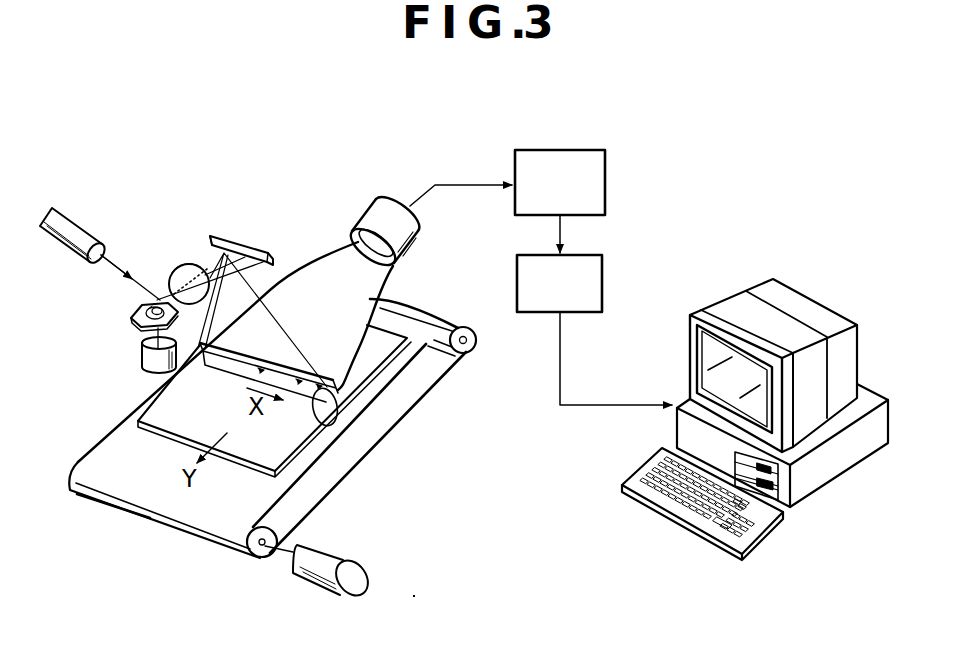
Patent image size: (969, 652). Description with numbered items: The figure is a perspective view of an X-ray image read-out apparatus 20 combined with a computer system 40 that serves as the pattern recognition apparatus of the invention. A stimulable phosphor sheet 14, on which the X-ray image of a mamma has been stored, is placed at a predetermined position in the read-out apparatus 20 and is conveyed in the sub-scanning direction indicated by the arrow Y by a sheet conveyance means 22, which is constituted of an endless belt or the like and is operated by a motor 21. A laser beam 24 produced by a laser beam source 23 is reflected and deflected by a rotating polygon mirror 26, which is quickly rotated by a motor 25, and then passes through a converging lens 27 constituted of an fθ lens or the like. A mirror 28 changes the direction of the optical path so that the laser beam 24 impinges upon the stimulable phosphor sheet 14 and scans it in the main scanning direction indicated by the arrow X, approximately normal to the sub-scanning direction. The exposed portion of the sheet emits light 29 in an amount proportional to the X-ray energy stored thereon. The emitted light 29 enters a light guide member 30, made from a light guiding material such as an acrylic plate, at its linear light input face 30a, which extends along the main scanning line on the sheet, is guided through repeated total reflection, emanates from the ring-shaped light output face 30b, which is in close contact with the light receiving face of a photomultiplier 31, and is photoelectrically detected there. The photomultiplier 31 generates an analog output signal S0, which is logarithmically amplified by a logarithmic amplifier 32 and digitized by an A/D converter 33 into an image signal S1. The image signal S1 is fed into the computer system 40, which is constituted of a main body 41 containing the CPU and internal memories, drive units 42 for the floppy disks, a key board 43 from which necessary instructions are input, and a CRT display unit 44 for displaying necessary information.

The stimulable phosphor sheet 14 is at (353, 472).
The read-out apparatus 20 is at (234, 213).
The motor 21 is at (330, 551).
The sheet conveyance means 22 is at (320, 507).
The laser beam source 23 is at (70, 225).
The laser beam 24 is at (117, 266).
The motor 25 is at (142, 357).
The rotating polygon mirror 26 is at (138, 313).
The converging lens 27 is at (183, 265).
The mirror 28 is at (259, 243).
The emitted light 29 is at (221, 362).
The light guide member 30 is at (333, 272).
The linear light input face 30a is at (295, 433).
The ring-shaped light output face 30b is at (384, 265).
The photomultiplier 31 is at (379, 209).
The logarithmic amplifier 32 is at (606, 176).
The A/D converter 33 is at (603, 281).
The computer system 40 is at (838, 300).
The main body 41 is at (868, 400).
The drive units 42 is at (777, 487).
The key board 43 is at (771, 515).
The CRT display unit 44 is at (708, 354).
The analog output signal S0 is at (473, 185).
The image signal S1 is at (565, 337).